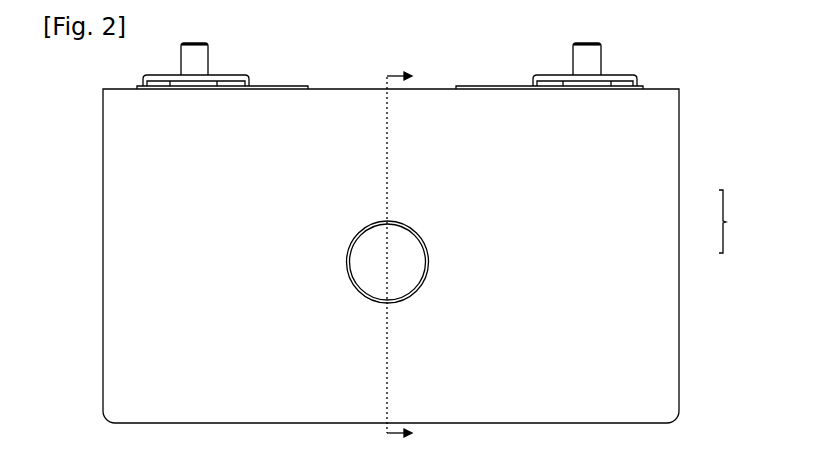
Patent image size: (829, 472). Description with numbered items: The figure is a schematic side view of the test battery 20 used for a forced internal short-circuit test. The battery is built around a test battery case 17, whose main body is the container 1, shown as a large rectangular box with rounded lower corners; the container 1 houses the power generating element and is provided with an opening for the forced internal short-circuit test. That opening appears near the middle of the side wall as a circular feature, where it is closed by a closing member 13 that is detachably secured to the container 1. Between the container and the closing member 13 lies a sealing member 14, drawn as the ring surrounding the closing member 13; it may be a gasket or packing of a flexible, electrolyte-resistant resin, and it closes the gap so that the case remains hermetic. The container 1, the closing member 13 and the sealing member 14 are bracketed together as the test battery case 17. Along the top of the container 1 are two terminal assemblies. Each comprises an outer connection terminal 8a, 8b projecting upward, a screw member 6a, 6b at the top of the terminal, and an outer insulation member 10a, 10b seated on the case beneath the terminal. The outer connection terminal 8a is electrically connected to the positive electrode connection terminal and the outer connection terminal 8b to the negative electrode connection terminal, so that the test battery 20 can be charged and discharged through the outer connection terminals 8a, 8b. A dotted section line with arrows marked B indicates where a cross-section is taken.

The test battery 20 is at (687, 77).
The container 1 is at (638, 208).
The closing member 13 is at (408, 269).
The sealing member 14 is at (420, 240).
The test battery case 17 is at (735, 221).
The screw member 6a is at (188, 63).
The screw member 6b is at (588, 63).
The outer connection terminal 8a is at (219, 79).
The outer connection terminal 8b is at (562, 79).
The outer insulation member 10a is at (267, 87).
The outer insulation member 10b is at (512, 87).